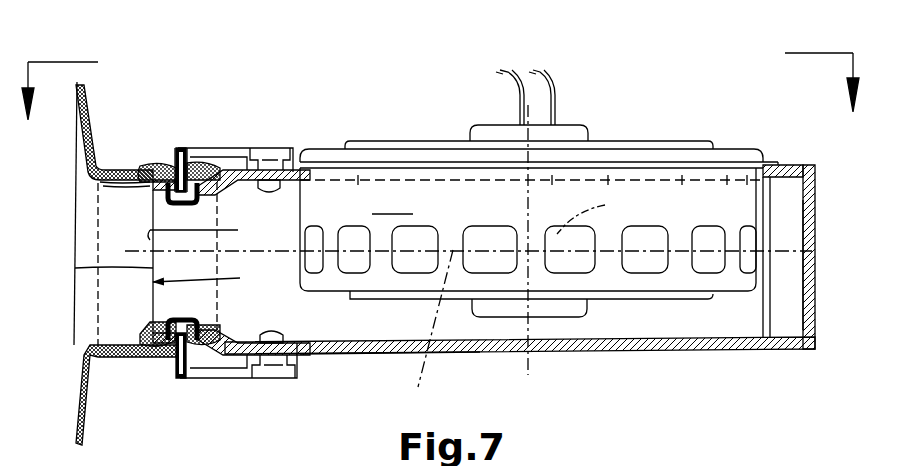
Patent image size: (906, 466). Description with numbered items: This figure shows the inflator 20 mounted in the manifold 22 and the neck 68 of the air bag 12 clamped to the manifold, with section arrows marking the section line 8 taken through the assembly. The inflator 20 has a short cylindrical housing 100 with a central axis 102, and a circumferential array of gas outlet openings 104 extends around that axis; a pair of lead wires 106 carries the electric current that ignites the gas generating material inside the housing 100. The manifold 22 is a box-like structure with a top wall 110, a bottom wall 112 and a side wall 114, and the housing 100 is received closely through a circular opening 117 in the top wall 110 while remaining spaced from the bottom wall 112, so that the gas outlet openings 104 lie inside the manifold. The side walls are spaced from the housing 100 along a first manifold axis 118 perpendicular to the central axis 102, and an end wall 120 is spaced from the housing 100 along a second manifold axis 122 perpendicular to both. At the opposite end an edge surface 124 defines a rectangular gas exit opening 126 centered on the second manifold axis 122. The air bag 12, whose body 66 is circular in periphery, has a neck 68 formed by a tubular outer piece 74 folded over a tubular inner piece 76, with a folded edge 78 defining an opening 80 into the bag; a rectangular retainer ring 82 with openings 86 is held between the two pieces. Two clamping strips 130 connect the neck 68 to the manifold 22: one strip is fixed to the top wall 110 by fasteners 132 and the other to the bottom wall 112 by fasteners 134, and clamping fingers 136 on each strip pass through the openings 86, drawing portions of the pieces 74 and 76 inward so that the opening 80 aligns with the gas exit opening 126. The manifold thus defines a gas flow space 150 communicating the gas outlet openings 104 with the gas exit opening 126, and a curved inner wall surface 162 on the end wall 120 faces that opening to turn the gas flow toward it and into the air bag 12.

The section line 8- 8 is at (440, 100).
The air bag 12 is at (74, 232).
The body 66 is at (90, 120).
The tubular outer piece 74 is at (104, 176).
The tubular inner piece 76 is at (112, 188).
The neck 68 is at (158, 165).
The openings 86 is at (183, 150).
The clamping fingers 136 is at (172, 200).
The clamping strips 130 is at (222, 143).
The folded edge 78 is at (218, 178).
The fasteners 132 is at (270, 160).
The fasteners 134 is at (276, 372).
The edge surface 124 is at (213, 230).
The gas exit opening 126 is at (216, 280).
The retainer ring 82 is at (75, 268).
The opening 80 is at (220, 311).
The circular opening 117 is at (334, 172).
The housing 100 is at (656, 157).
The inflator 20 is at (626, 140).
The lead wires 106 is at (518, 82).
The central axis 102 is at (528, 204).
The gas flow space 150 is at (392, 205).
The first manifold axis 118 is at (601, 214).
The gas outlet openings 104 is at (644, 266).
The second manifold axis 122 is at (426, 335).
The bottom wall 112 is at (682, 352).
The side wall 114 is at (328, 333).
The top wall 110 is at (786, 165).
The manifold 22 is at (820, 217).
The end wall 120 is at (815, 262).
The curved inner wall surface 162 is at (792, 312).